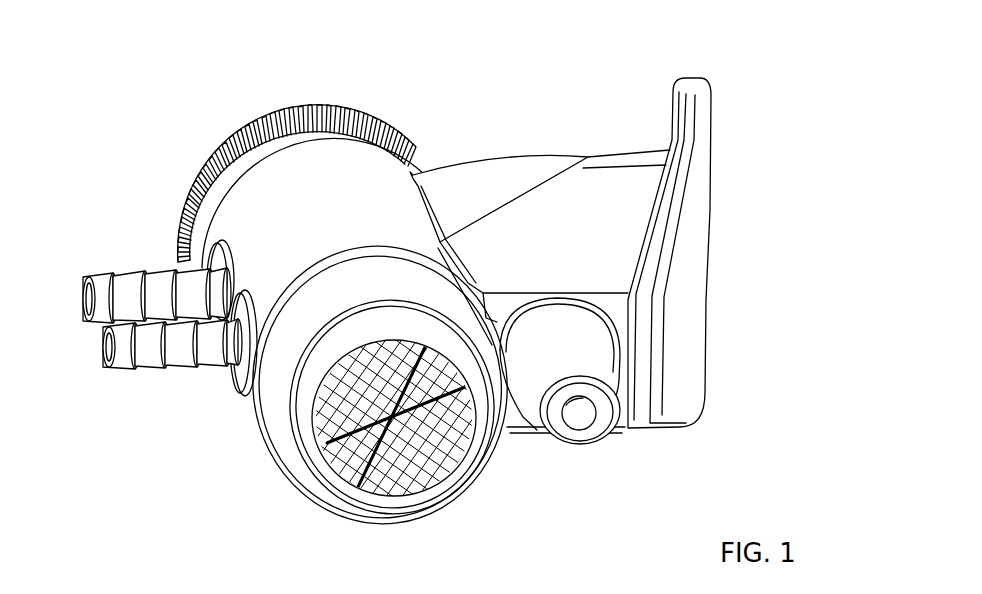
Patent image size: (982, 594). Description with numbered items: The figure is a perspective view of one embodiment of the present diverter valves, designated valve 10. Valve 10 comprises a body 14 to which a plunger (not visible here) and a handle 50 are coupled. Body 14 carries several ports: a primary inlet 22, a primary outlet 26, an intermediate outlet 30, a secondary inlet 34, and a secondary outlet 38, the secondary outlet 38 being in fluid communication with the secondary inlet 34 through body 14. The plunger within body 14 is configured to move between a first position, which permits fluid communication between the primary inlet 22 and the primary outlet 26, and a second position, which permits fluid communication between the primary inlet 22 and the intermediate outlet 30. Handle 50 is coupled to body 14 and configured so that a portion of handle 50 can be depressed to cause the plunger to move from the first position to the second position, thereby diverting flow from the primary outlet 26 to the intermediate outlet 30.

The diverter valve 10 is at (758, 60).
The body 14 is at (373, 200).
The primary inlet 22 is at (237, 130).
The primary outlet 26 is at (428, 490).
The intermediate outlet 30 is at (100, 287).
The secondary inlet 34 is at (105, 355).
The secondary outlet 38 is at (580, 426).
The handle 50 is at (710, 218).